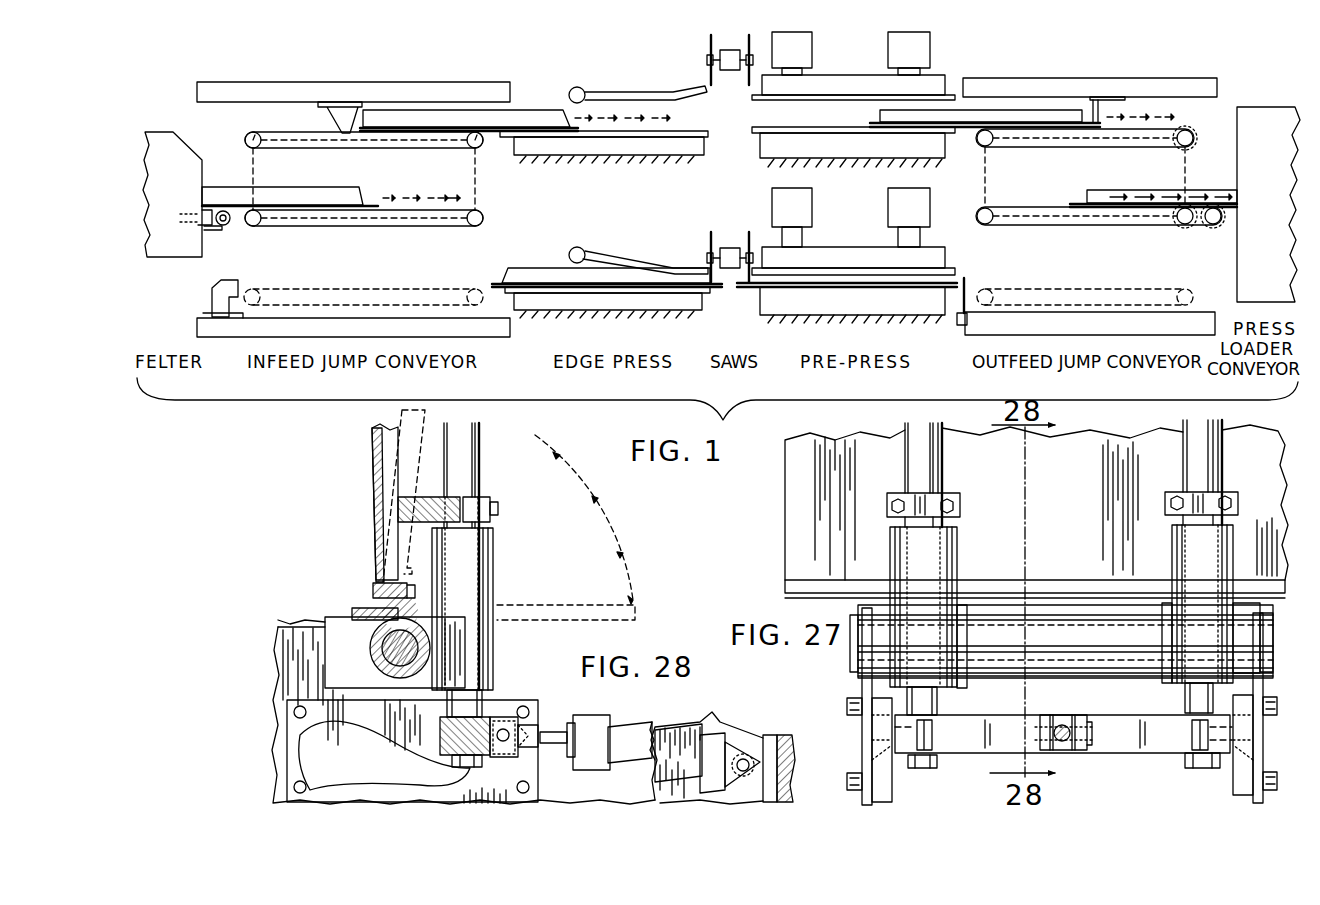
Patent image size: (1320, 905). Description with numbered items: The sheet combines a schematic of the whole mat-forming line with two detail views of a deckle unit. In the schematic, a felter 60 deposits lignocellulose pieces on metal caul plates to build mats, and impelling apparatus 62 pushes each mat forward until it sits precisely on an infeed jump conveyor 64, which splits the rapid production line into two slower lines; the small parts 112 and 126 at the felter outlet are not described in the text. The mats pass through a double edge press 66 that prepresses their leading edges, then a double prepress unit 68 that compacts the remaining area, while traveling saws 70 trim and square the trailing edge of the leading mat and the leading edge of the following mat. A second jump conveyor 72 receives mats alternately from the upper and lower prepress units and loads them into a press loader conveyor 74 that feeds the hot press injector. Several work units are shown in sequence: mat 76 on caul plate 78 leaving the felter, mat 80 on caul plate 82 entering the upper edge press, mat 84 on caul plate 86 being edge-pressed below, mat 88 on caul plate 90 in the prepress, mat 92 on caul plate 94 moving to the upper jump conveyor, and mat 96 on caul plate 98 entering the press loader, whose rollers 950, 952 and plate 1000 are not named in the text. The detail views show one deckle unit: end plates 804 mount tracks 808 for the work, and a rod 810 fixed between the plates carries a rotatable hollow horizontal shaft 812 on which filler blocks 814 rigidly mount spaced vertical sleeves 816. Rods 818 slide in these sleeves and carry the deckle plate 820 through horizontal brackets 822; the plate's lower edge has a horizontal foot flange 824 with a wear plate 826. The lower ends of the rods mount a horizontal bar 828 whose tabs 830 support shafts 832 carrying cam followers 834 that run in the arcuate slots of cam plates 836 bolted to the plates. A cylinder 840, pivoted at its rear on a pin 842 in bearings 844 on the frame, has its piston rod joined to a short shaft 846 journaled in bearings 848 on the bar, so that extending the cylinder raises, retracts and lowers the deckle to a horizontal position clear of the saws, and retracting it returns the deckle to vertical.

In FIG. 1, the felter 60 is at (172, 261).
In FIG. 1, the impelling apparatus 62 is at (202, 221).
In FIG. 1, the roller 112 is at (228, 224).
In FIG. 1, the felter support 126 is at (214, 232).
In FIG. 1, the infeed jump conveyor 64 is at (250, 343).
In FIG. 1, the double edge press 66 is at (560, 323).
In FIG. 1, the double prepress unit 68 is at (810, 328).
In FIG. 1, the traveling saws 70 is at (730, 298).
In FIG. 1, the second jump conveyor 72 is at (975, 338).
In FIG. 1, the press loader conveyor 74 is at (1263, 100).
In FIG. 1, the mat 76 is at (348, 187).
In FIG. 1, the caul plate 78 is at (378, 206).
In FIG. 1, the mat 80 is at (515, 122).
In FIG. 1, the caul plate 82 is at (500, 135).
In FIG. 1, the mat 84 is at (520, 268).
In FIG. 1, the caul plate 86 is at (498, 284).
In FIG. 1, the mat 88 is at (950, 278).
In FIG. 1, the caul plate 90 is at (968, 284).
In FIG. 1, the mat 92 is at (890, 112).
In FIG. 1, the caul plate 94 is at (873, 123).
In FIG. 1, the mat 96 is at (1084, 190).
In FIG. 1, the caul plate 98 is at (1075, 203).
In FIG. 1, the roller 950 is at (1213, 229).
In FIG. 1, the roller 952 is at (1183, 226).
In FIG. 1, the transfer plate 1000 is at (1112, 97).
In FIG. 28, the end plates 804 is at (293, 626).
In FIG. 27, the end plates 804 is at (862, 690).
In FIG. 28, the tracks 808 is at (355, 608).
In FIG. 27, the tracks 808 is at (993, 606).
In FIG. 28, the rod 810 is at (385, 656).
In FIG. 27, the rod 810 is at (1050, 660).
In FIG. 28, the hollow horizontal shaft 812 is at (395, 670).
In FIG. 27, the hollow horizontal shaft 812 is at (1015, 673).
In FIG. 28, the filler blocks 814 is at (420, 682).
In FIG. 27, the filler blocks 814 is at (960, 647).
In FIG. 28, the vertical sleeves 816 is at (493, 650).
In FIG. 27, the vertical sleeves 816 is at (905, 560).
In FIG. 28, the rods 818 is at (479, 467).
In FIG. 27, the rods 818 is at (937, 458).
In FIG. 28, the deckle plate 820 is at (372, 465).
In FIG. 27, the deckle plate 820 is at (785, 552).
In FIG. 28, the horizontal brackets 822 is at (427, 497).
In FIG. 27, the horizontal brackets 822 is at (925, 497).
In FIG. 28, the horizontal foot flange 824 is at (430, 603).
In FIG. 27, the horizontal foot flange 824 is at (785, 584).
In FIG. 28, the wear plate 826 is at (375, 590).
In FIG. 27, the wear plate 826 is at (785, 597).
In FIG. 28, the horizontal bar 828 is at (443, 748).
In FIG. 27, the horizontal bar 828 is at (1130, 715).
In FIG. 27, the tabs 830 is at (930, 738).
In FIG. 27, the shafts 832 is at (912, 768).
In FIG. 28, the cam followers 834 is at (525, 733).
In FIG. 27, the cam followers 834 is at (870, 756).
In FIG. 28, the cam plates 836 is at (535, 790).
In FIG. 27, the cam plates 836 is at (893, 790).
In FIG. 28, the cylinder 840 is at (628, 735).
In FIG. 28, the pin 842 is at (743, 745).
In FIG. 28, the bearings 844 is at (755, 752).
In FIG. 28, the short shaft 846 is at (505, 745).
In FIG. 27, the short shaft 846 is at (1092, 733).
In FIG. 28, the bearings 848 is at (505, 718).
In FIG. 27, the bearings 848 is at (1080, 715).